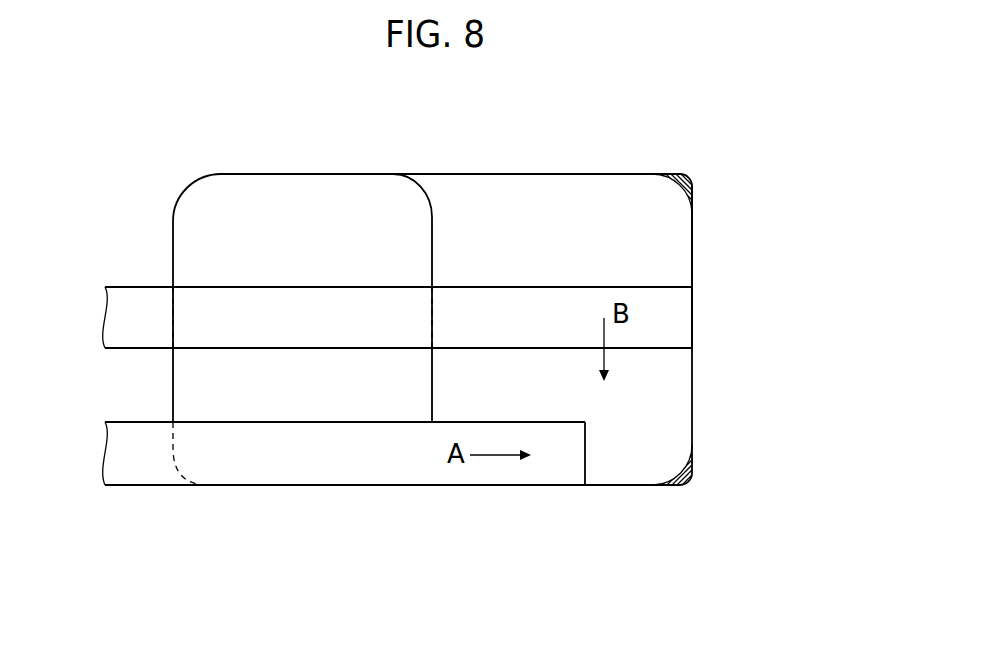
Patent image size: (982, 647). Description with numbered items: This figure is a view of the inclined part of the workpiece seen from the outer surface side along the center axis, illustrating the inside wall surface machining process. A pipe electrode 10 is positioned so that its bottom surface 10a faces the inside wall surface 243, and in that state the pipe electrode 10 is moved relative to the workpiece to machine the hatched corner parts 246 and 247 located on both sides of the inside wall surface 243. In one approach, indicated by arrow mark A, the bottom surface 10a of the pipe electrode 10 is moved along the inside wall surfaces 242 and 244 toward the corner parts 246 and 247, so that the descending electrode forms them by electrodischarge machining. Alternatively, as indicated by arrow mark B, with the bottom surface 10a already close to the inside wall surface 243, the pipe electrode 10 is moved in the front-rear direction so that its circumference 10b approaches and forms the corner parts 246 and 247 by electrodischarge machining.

The pipe electrode 10 is at (135, 280).
The bottom surface of the pipe electrode 10a is at (692, 320).
The circumference of the pipe electrode 10b is at (482, 287).
The inside wall surface 242 is at (276, 485).
The inside wall surface 243 is at (693, 244).
The inside wall surface 244 is at (294, 176).
The corner part 246 is at (685, 472).
The corner part 247 is at (673, 187).